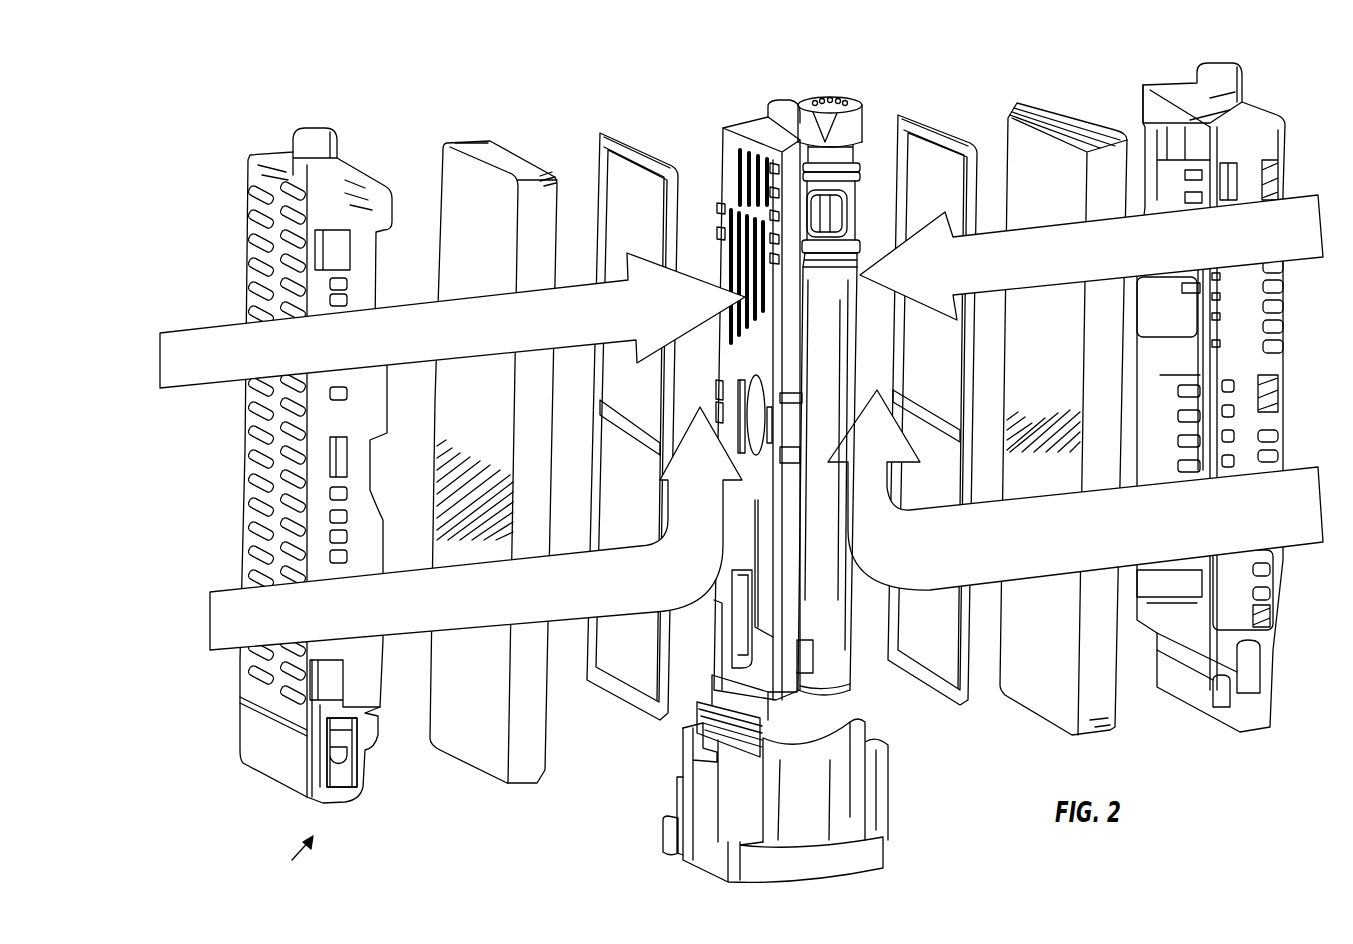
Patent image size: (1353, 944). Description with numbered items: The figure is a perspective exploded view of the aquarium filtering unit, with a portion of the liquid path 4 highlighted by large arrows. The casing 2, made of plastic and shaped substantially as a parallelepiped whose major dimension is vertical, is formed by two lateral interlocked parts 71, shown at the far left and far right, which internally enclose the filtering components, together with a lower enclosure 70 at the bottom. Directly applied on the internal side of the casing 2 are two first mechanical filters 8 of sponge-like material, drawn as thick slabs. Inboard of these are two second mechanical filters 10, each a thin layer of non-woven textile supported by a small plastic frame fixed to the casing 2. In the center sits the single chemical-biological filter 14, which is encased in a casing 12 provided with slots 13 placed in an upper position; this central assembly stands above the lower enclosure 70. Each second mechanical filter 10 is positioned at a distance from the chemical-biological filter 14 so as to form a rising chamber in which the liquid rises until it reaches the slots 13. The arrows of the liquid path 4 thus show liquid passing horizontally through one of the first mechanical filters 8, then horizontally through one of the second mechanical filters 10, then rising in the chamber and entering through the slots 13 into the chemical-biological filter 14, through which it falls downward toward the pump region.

The casing 2 is at (368, 185).
The liquid path 4 is at (472, 341).
The first mechanical filter 8 is at (497, 188).
The second mechanical filter 10 is at (620, 185).
The casing of chemical-biological filter 12 is at (753, 477).
The slots 13 is at (748, 147).
The chemical-biological filter 14 is at (845, 635).
The lower enclosure 70 is at (835, 818).
The lateral interlocked parts 71 is at (373, 667).